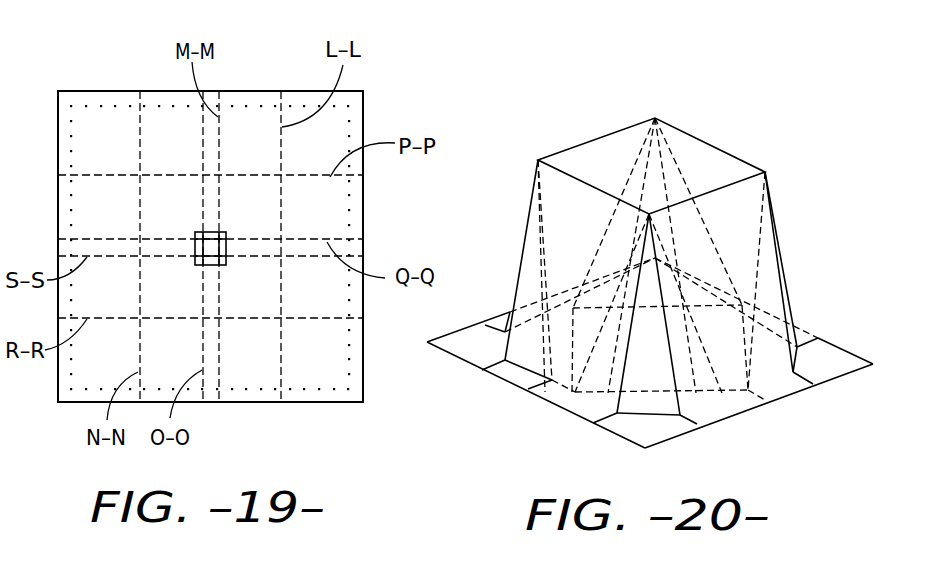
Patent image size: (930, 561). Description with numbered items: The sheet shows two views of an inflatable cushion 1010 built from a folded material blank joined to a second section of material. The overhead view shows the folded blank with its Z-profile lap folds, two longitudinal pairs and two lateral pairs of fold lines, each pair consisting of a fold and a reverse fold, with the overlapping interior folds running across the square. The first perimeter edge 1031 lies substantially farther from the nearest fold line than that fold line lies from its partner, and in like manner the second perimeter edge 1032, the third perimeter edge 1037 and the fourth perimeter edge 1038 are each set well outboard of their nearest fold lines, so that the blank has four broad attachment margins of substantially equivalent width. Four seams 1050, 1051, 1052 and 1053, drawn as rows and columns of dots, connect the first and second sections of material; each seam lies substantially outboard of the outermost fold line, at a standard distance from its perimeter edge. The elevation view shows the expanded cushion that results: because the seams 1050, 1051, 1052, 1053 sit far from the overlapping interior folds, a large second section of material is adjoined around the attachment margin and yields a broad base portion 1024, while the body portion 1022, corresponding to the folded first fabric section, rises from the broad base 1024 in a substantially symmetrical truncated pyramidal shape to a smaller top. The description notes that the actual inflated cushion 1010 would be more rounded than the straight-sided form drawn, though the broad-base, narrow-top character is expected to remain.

In FIG. 20, the cushion 1010 is at (787, 138).
In FIG. 20, the body portion 1022 is at (675, 128).
In FIG. 20, the base portion 1024 is at (825, 365).
In FIG. 19, the first perimeter edge 1031 is at (365, 123).
In FIG. 19, the second perimeter edge 1032 is at (58, 375).
In FIG. 19, the third perimeter edge 1037 is at (152, 91).
In FIG. 19, the fourth perimeter edge 1038 is at (327, 403).
In FIG. 19, the seam 1050 is at (232, 107).
In FIG. 19, the seam 1051 is at (350, 213).
In FIG. 19, the seam 1052 is at (243, 390).
In FIG. 19, the seam 1053 is at (72, 137).